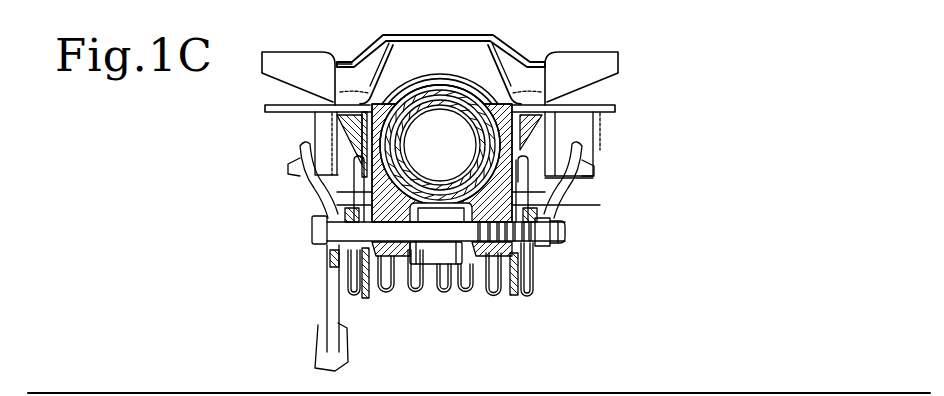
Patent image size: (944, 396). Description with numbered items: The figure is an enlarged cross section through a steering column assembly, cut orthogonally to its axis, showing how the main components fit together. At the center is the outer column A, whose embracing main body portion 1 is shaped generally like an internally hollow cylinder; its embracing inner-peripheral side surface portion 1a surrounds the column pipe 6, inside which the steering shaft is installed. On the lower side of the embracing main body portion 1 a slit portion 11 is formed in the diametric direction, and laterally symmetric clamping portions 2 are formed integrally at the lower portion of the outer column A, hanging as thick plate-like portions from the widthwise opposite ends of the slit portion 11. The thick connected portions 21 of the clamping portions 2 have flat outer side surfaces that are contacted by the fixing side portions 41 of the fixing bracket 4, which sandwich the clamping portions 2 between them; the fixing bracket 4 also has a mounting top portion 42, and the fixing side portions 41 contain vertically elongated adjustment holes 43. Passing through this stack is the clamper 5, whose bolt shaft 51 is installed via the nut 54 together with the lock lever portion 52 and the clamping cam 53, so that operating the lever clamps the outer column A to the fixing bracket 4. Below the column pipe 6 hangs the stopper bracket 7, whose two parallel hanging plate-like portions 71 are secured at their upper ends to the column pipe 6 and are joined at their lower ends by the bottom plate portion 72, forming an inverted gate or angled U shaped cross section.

The embracing main body portion 1 is at (528, 58).
The embracing inner-peripheral side surface portion 1a is at (484, 88).
The clamping portion 2 is at (392, 284).
The fixing bracket 4 is at (540, 51).
The clamper 5 is at (566, 252).
The column pipe 6 is at (421, 92).
The stopper bracket 7 is at (432, 282).
The slit portion 11 is at (400, 197).
The connected portion 21 is at (366, 162).
The fixing side portion 41 is at (364, 300).
The mounting top portion 42 is at (350, 62).
The adjustment hole 43 is at (345, 207).
The bolt shaft 51 is at (443, 250).
The lock lever portion 52 is at (328, 300).
The clamping cam 53 is at (340, 245).
The nut 54 is at (542, 247).
The hanging plate-like portion 71 is at (418, 290).
The bottom plate portion 72 is at (442, 300).
The outer column A is at (392, 90).